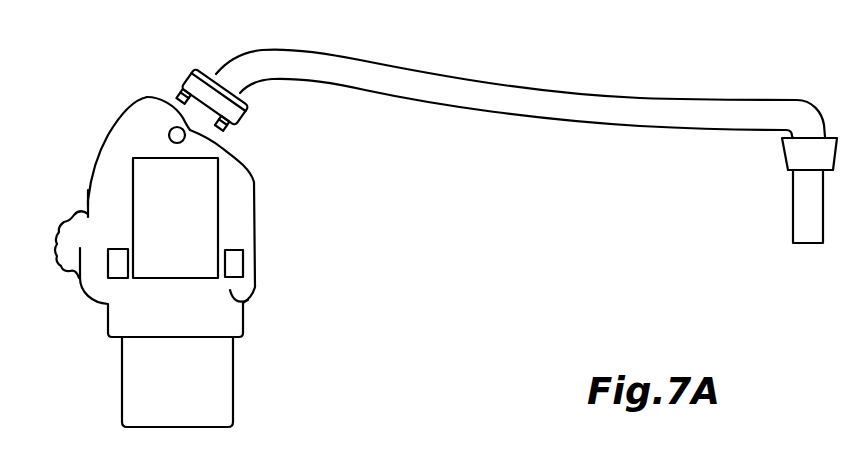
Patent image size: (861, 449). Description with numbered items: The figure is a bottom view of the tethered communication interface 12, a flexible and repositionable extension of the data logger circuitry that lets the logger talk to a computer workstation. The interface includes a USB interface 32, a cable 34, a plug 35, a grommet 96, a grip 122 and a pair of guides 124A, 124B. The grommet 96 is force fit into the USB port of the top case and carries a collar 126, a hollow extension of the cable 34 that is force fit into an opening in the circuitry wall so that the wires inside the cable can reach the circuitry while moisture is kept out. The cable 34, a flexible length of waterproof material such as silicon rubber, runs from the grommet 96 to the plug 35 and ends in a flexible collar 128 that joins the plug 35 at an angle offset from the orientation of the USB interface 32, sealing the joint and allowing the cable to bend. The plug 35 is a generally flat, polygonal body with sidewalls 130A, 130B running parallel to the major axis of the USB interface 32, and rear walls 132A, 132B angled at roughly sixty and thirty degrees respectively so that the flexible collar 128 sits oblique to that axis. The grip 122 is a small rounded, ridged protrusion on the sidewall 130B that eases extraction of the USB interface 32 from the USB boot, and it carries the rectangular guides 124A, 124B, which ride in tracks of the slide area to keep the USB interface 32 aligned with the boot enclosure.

The tethered communication interface 12 is at (383, 221).
The USB interface 32 is at (176, 395).
The cable 34 is at (522, 107).
The plug 35 is at (197, 307).
The grommet 96 is at (787, 155).
The grip 122 is at (80, 284).
The first guide 124A is at (118, 268).
The second guide 124B is at (233, 260).
The collar 126 is at (812, 205).
The flexible collar 128 is at (185, 86).
The first sidewall 130A is at (256, 287).
The second sidewall 130B is at (86, 197).
The first rear wall 132A is at (235, 153).
The second rear wall 132B is at (122, 115).